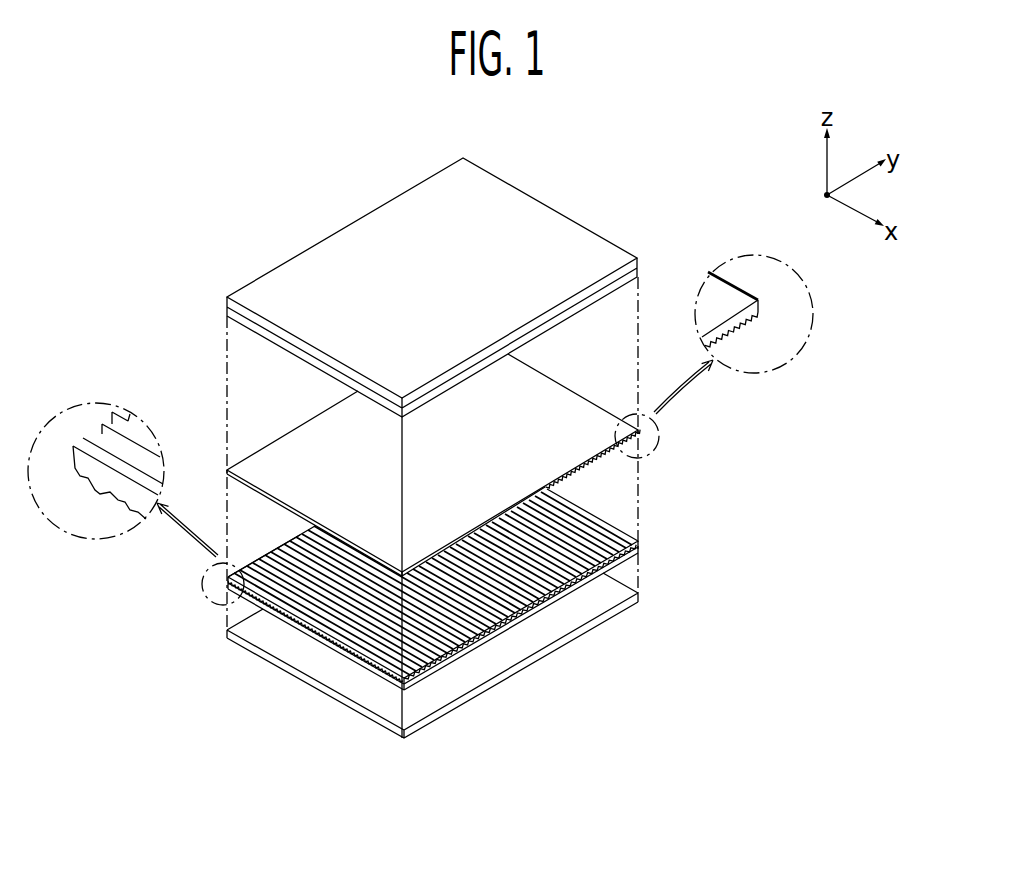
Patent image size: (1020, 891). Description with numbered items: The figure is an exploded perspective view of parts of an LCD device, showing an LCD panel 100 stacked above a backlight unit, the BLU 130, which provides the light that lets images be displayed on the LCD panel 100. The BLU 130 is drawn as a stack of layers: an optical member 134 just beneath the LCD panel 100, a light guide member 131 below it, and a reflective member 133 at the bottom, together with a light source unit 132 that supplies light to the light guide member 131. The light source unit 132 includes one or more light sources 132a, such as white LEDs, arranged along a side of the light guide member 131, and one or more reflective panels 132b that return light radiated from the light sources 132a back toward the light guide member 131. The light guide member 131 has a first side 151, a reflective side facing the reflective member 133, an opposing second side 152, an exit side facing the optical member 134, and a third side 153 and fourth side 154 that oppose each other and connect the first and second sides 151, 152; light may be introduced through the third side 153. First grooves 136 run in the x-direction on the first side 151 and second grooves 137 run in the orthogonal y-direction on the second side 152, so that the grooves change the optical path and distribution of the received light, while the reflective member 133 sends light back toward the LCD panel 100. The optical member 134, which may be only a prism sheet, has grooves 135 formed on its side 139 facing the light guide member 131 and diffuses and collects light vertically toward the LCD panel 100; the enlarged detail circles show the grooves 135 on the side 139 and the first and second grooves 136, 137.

The LCD panel 100 is at (566, 231).
The BLU 130 is at (520, 557).
The light guide member 131 is at (515, 656).
The light source unit 132 is at (491, 576).
The light source 132a is at (643, 547).
The reflective panel 132b is at (465, 573).
The reflective member 133 is at (514, 655).
The optical member 134 is at (580, 443).
The grooves 135 is at (738, 333).
The first grooves 136 is at (97, 430).
The second grooves 137 is at (120, 505).
The side 139 is at (760, 313).
The first side 151 is at (519, 632).
The second side 152 is at (253, 546).
The third side 153 is at (598, 503).
The fourth side 154 is at (315, 645).